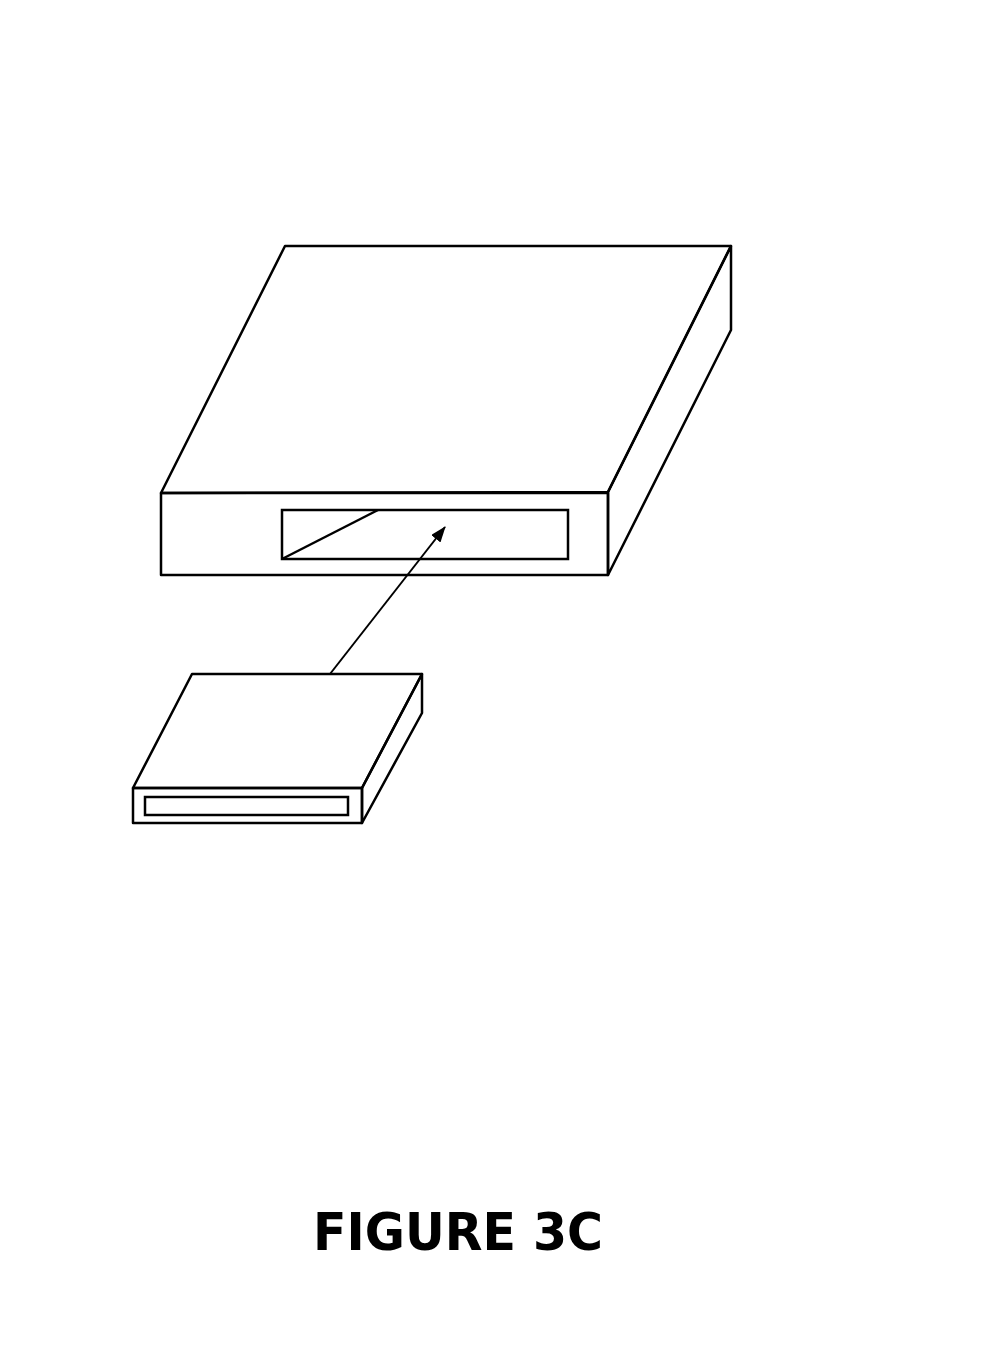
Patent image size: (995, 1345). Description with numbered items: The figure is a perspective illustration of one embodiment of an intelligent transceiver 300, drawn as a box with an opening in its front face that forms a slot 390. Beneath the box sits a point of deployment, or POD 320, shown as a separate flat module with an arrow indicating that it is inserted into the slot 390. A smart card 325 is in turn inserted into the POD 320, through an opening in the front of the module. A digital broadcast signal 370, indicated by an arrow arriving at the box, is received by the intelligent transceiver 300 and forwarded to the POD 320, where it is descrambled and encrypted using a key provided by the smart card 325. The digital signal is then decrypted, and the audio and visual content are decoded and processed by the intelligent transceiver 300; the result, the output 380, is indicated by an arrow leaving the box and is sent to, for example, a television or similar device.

The intelligent transceiver 300 is at (85, 36).
The point of deployment (POD) 320 is at (400, 742).
The smart card 325 is at (270, 806).
The digital broadcast signal 370 is at (732, 295).
The output 380 is at (205, 197).
The slot 390 is at (532, 562).